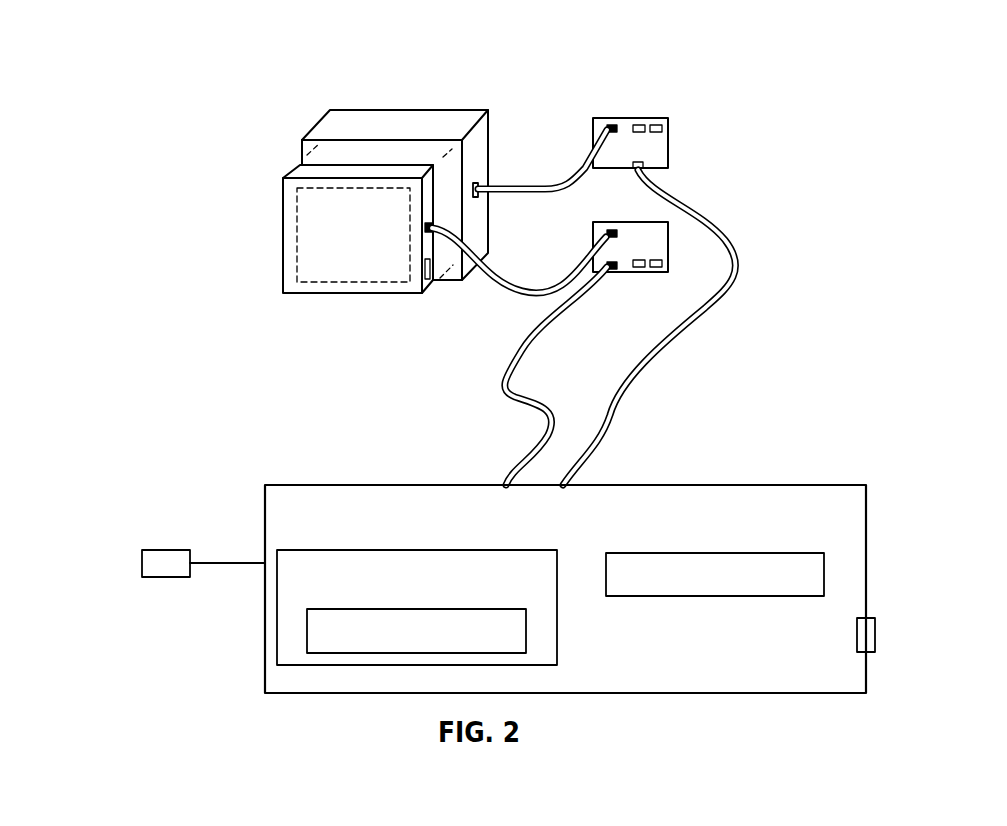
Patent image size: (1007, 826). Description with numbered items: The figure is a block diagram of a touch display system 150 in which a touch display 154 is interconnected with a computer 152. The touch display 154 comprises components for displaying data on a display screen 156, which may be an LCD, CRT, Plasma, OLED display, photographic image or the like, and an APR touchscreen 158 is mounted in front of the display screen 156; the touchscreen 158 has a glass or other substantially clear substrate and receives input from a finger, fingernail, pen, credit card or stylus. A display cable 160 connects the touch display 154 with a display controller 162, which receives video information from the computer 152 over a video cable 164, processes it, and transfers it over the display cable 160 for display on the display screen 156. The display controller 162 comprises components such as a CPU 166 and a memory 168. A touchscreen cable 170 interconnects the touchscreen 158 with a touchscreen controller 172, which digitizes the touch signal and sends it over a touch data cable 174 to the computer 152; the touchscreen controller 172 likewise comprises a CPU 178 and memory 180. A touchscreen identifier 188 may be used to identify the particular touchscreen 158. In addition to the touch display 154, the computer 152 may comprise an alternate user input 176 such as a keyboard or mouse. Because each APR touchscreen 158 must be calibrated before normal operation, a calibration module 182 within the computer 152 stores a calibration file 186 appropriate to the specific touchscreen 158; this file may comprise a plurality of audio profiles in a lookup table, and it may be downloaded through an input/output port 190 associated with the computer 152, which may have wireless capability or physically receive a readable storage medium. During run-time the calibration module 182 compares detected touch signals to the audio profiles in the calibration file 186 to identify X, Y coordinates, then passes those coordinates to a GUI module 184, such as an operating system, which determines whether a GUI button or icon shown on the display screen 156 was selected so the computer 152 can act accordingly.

The touch display system 150 is at (246, 44).
The computer 152 is at (331, 485).
The touch display 154 is at (340, 122).
The display screen 156 is at (332, 154).
The APR touchscreen 158 is at (303, 222).
The display cable 160 is at (578, 168).
The display controller 162 is at (595, 122).
The video cable 164 is at (615, 412).
The CPU 166 is at (638, 124).
The memory 168 is at (673, 125).
The touchscreen cable 170 is at (515, 291).
The touchscreen controller 172 is at (598, 233).
The touch data cable 174 is at (520, 450).
The alternate user input 176 is at (142, 563).
The CPU 178 is at (637, 273).
The memory 180 is at (658, 273).
The calibration module 182 is at (345, 550).
The GUI module 184 is at (670, 553).
The calibration file 186 is at (307, 632).
The touchscreen identifier 188 is at (433, 283).
The input/output (I/O) port 190 is at (875, 635).